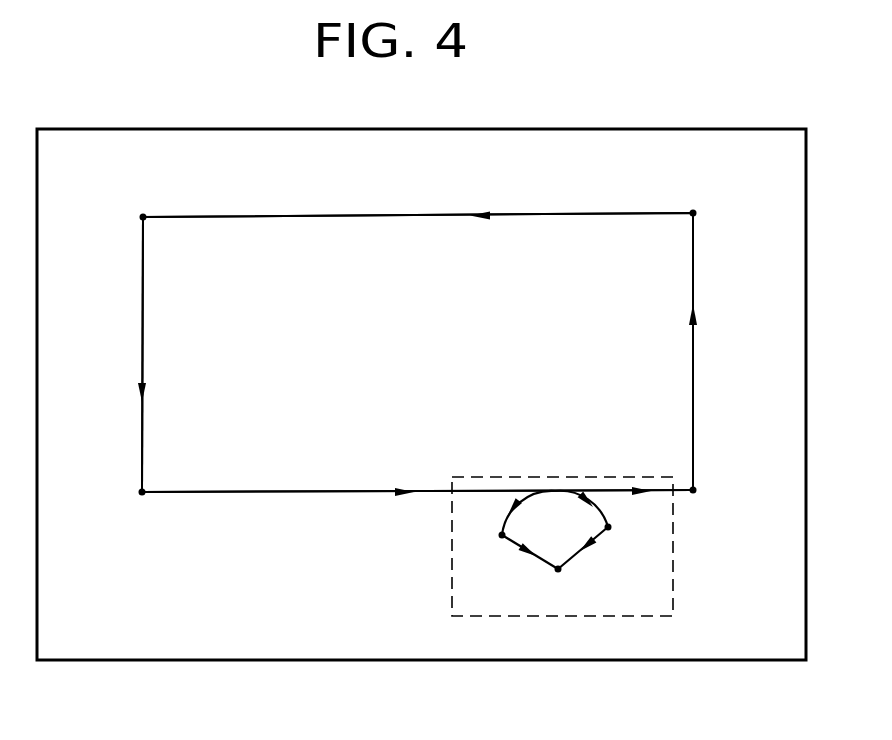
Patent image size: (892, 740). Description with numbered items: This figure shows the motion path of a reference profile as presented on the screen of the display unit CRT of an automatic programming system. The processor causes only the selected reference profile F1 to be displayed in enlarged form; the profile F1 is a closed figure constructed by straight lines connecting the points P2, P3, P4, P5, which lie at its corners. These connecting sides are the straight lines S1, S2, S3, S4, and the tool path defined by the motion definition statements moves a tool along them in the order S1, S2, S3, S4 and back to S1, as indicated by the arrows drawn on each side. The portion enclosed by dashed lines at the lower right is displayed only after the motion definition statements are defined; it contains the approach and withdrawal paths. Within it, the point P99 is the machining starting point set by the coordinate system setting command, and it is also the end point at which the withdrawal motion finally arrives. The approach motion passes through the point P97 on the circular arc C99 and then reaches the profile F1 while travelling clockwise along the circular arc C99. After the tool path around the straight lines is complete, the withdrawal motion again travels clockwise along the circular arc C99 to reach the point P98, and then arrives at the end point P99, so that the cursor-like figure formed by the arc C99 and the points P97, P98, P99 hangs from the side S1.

The display unit CRT is at (707, 643).
The profile F1 is at (573, 223).
The straight line S1 is at (362, 495).
The straight line S2 is at (694, 348).
The straight line S3 is at (425, 214).
The straight line S4 is at (142, 348).
The point P2 is at (710, 487).
The point P3 is at (695, 211).
The point P4 is at (134, 201).
The point P5 is at (128, 494).
The circular arc C99 is at (528, 495).
The point P97 is at (481, 550).
The point P98 is at (632, 534).
The point P99 is at (564, 584).